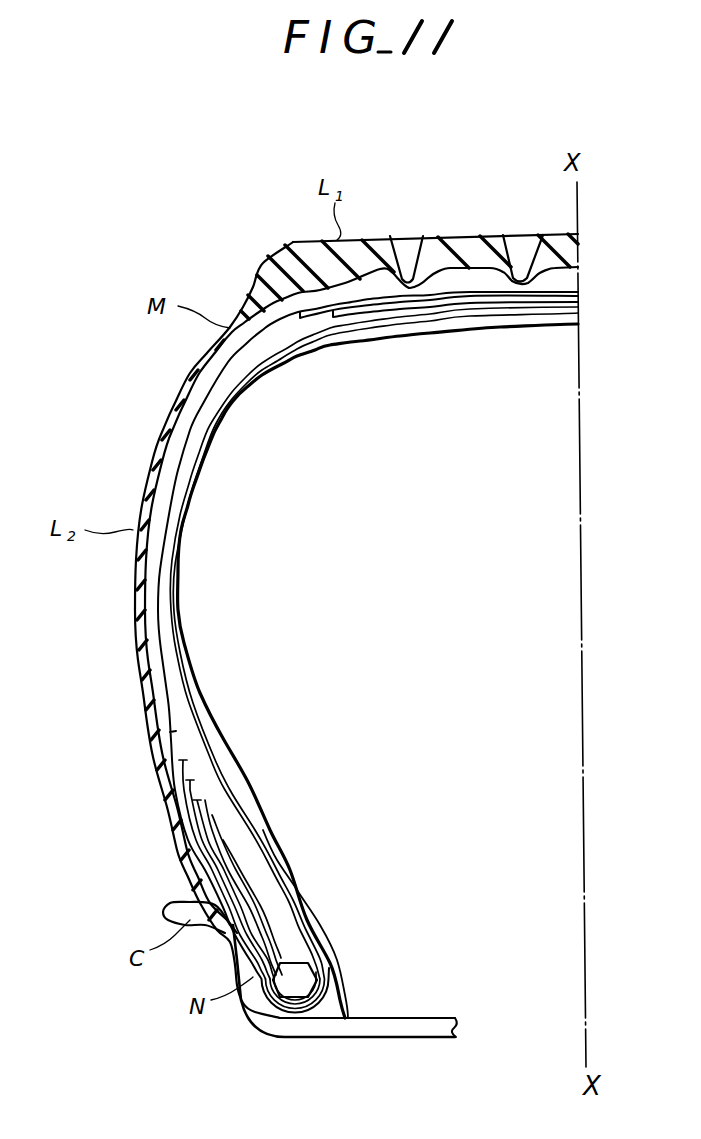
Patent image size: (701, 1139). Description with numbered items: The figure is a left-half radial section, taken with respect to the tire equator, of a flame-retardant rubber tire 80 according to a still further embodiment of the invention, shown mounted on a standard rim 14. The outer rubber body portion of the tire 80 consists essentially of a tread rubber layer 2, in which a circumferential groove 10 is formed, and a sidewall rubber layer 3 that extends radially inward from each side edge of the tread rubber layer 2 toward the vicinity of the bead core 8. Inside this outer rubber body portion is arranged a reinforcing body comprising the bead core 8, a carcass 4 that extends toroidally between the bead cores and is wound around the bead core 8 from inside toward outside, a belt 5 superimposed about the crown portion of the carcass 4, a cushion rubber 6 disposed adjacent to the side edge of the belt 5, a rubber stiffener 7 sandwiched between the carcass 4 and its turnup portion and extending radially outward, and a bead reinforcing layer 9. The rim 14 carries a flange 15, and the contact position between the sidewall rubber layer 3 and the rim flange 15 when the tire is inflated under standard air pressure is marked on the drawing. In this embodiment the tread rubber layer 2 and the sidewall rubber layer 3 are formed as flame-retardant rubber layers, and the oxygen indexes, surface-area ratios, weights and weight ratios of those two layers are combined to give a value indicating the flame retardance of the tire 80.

The tire 80 is at (283, 240).
The tread rubber layer 2 is at (457, 240).
The circumferential groove 10 is at (403, 242).
The belt 5 is at (563, 267).
The cushion rubber 6 is at (300, 335).
The carcass 4 is at (158, 579).
The sidewall rubber layer 3 is at (150, 594).
The bead reinforcing layer 9 is at (210, 867).
The rubber stiffener 7 is at (283, 897).
The bead core 8 is at (305, 977).
The flange of the rim 15 is at (227, 937).
The standard rim 14 is at (355, 1040).